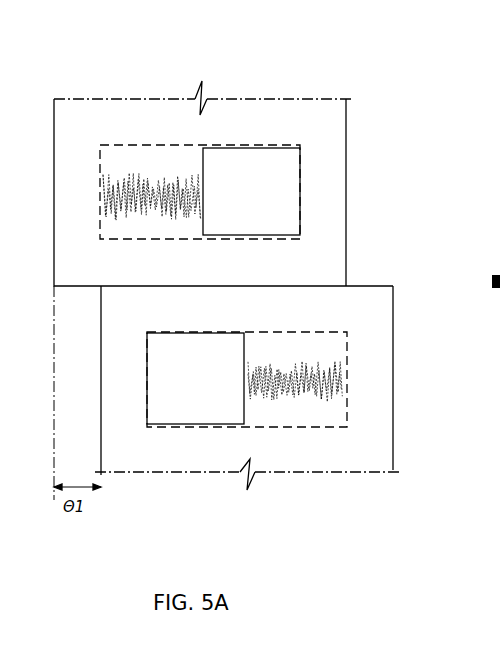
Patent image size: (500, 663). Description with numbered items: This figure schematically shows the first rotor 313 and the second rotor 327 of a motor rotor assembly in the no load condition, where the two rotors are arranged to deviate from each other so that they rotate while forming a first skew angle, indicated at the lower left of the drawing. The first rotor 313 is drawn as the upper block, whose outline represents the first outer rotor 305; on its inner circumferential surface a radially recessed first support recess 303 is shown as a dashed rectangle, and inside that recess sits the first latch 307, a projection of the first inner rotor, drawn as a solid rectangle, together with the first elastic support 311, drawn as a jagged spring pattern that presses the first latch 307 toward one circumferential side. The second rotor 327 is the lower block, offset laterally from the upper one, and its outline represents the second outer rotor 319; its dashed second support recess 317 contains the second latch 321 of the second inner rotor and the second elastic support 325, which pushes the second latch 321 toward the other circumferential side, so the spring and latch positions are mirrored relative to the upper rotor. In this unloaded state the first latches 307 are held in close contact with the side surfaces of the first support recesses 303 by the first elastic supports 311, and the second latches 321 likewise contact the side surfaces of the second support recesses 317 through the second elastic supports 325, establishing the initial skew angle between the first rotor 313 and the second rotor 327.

The first support recess 303 is at (161, 153).
The first outer rotor 305 is at (338, 162).
The first latch 307 is at (263, 160).
The first elastic support 311 is at (147, 172).
The first rotor 313 is at (241, 264).
The second support recess 317 is at (332, 422).
The second outer rotor 319 is at (378, 337).
The second latch 321 is at (195, 417).
The second elastic support 325 is at (295, 403).
The second rotor 327 is at (290, 413).